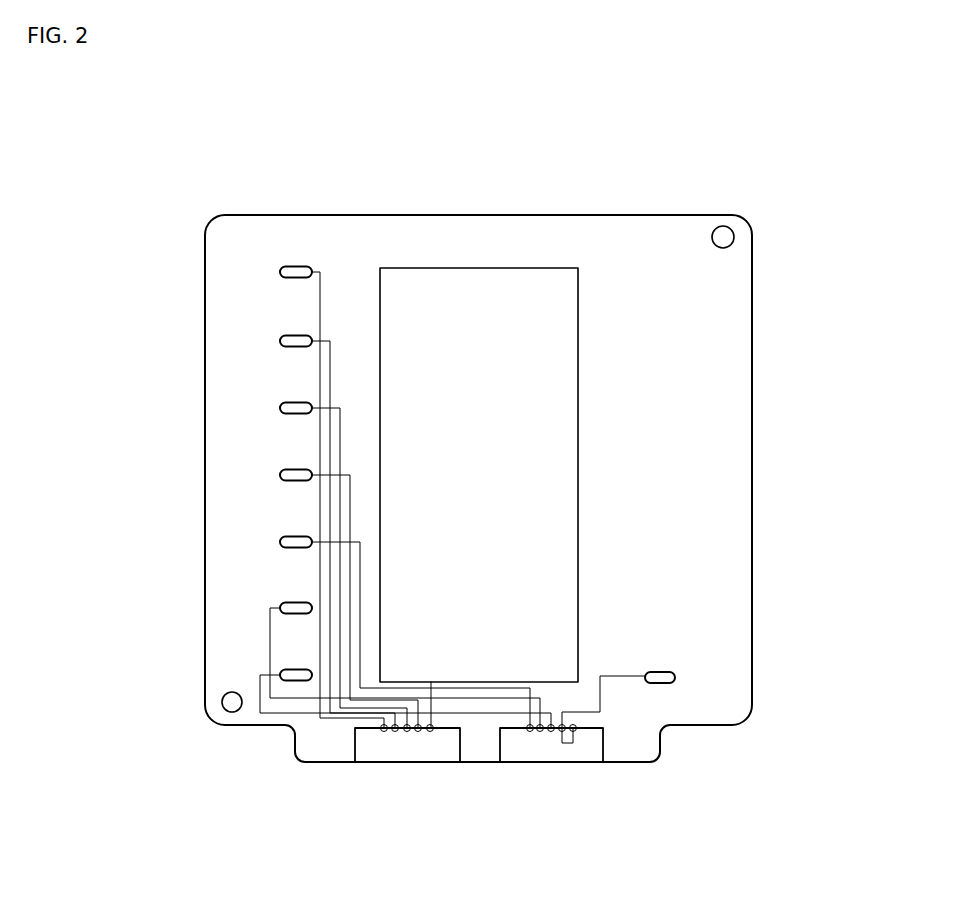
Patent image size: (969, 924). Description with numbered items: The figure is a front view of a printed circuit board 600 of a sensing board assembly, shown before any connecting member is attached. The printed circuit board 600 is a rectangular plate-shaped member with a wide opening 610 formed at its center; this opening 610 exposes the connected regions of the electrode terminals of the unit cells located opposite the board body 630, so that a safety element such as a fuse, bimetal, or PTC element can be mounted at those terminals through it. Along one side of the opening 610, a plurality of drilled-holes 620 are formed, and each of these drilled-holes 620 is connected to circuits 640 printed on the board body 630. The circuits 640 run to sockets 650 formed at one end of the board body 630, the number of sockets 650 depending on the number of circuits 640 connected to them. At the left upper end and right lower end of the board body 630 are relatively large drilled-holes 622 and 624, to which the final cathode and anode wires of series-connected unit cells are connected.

The printed circuit board 600 is at (162, 187).
The wide opening 610 is at (490, 277).
The drilled-holes 620 is at (280, 407).
The drilled-hole 622 is at (297, 265).
The drilled-hole 624 is at (675, 673).
The board body 630 is at (727, 470).
The circuits 640 is at (267, 617).
The sockets 650 is at (418, 747).